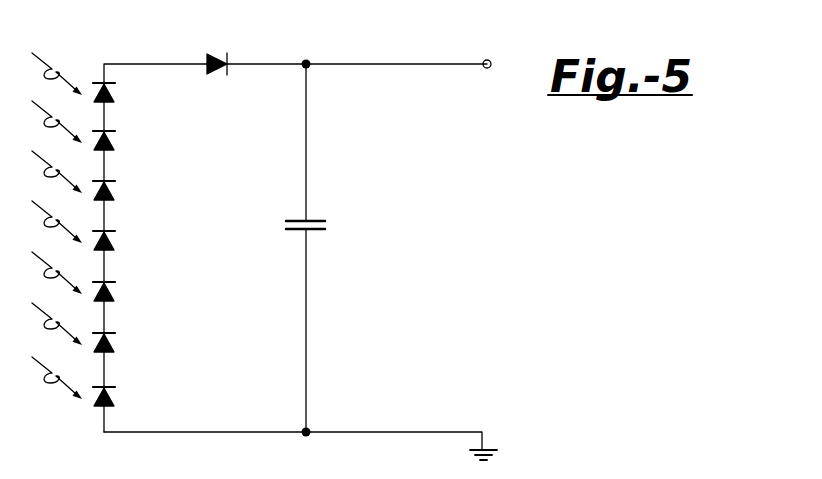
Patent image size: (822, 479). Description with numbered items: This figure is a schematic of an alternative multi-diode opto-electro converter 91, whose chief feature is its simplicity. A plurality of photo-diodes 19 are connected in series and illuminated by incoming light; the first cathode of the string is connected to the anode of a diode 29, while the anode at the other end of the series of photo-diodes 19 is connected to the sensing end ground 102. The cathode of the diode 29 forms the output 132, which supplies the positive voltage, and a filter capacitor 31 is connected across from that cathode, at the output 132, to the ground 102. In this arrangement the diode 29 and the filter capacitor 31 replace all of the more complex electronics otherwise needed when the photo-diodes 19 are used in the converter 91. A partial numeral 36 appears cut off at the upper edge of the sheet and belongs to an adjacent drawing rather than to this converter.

The photo-diodes 19 is at (113, 94).
The diode 29 is at (210, 52).
The filter capacitor 31 is at (313, 231).
The multi-diode opto-electro converter 91 is at (465, 254).
The output 132 is at (443, 66).
The sensing end ground 102 is at (491, 448).
The housing 36 is at (24, 7).